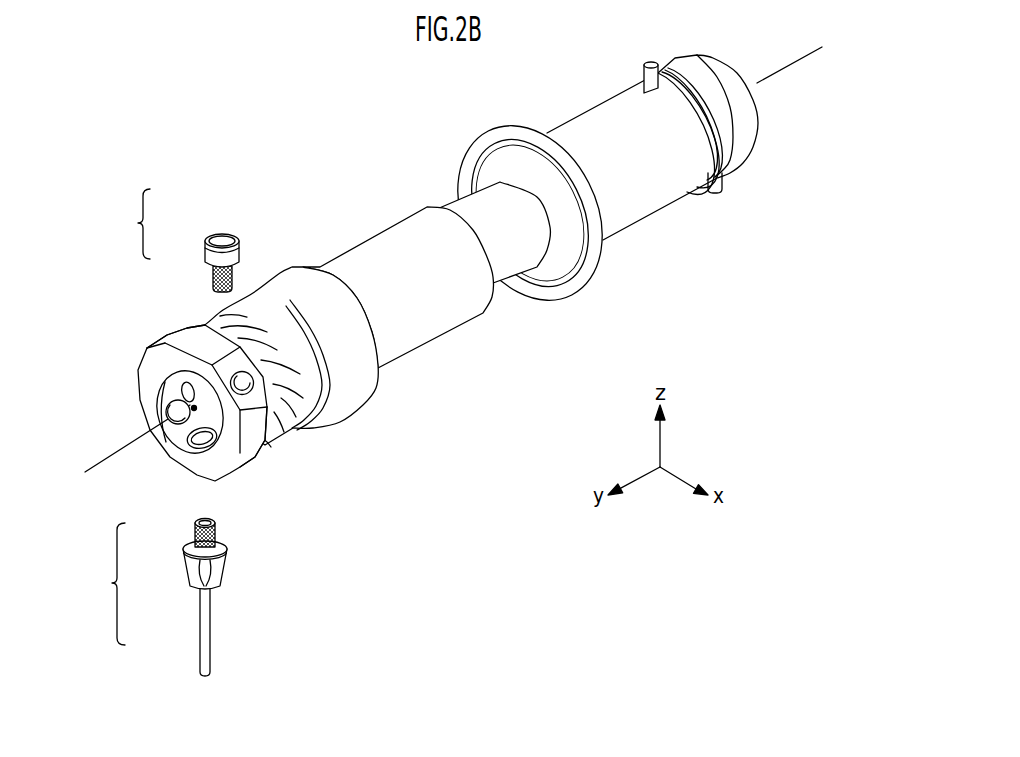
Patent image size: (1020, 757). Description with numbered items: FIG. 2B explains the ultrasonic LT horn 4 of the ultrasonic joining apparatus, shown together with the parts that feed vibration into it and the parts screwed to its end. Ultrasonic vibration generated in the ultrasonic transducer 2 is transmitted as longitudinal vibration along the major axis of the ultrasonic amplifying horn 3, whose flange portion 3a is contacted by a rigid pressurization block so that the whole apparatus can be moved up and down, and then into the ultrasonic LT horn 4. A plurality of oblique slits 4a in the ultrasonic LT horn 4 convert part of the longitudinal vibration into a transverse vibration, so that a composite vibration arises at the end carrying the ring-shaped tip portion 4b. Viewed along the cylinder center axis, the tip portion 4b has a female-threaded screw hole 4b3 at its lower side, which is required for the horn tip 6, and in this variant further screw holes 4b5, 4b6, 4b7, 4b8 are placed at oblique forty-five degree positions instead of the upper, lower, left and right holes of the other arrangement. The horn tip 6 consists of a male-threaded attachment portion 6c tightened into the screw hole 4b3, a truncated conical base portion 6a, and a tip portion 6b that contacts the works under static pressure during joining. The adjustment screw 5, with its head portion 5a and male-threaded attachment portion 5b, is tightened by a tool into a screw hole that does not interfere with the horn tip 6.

The ultrasonic transducer 2 is at (612, 96).
The ultrasonic amplifying horn 3 is at (605, 240).
The flange portion 3a is at (548, 300).
The ultrasonic LT horn 4 is at (370, 239).
The oblique slits 4a is at (278, 412).
The tip portion 4b is at (146, 426).
The screw hole 4b3 is at (195, 438).
The screw hole 4b5 is at (212, 363).
The screw hole 4b6 is at (246, 463).
The screw hole 4b7 is at (168, 407).
The screw hole 4b8 is at (165, 342).
The adjustment screw 5 is at (182, 240).
The head portion 5a is at (220, 236).
The attachment portion 5b is at (212, 282).
The horn tip 6 is at (165, 598).
The base portion 6a is at (187, 566).
The tip portion 6b is at (169, 631).
The attachment portion 6c is at (194, 530).